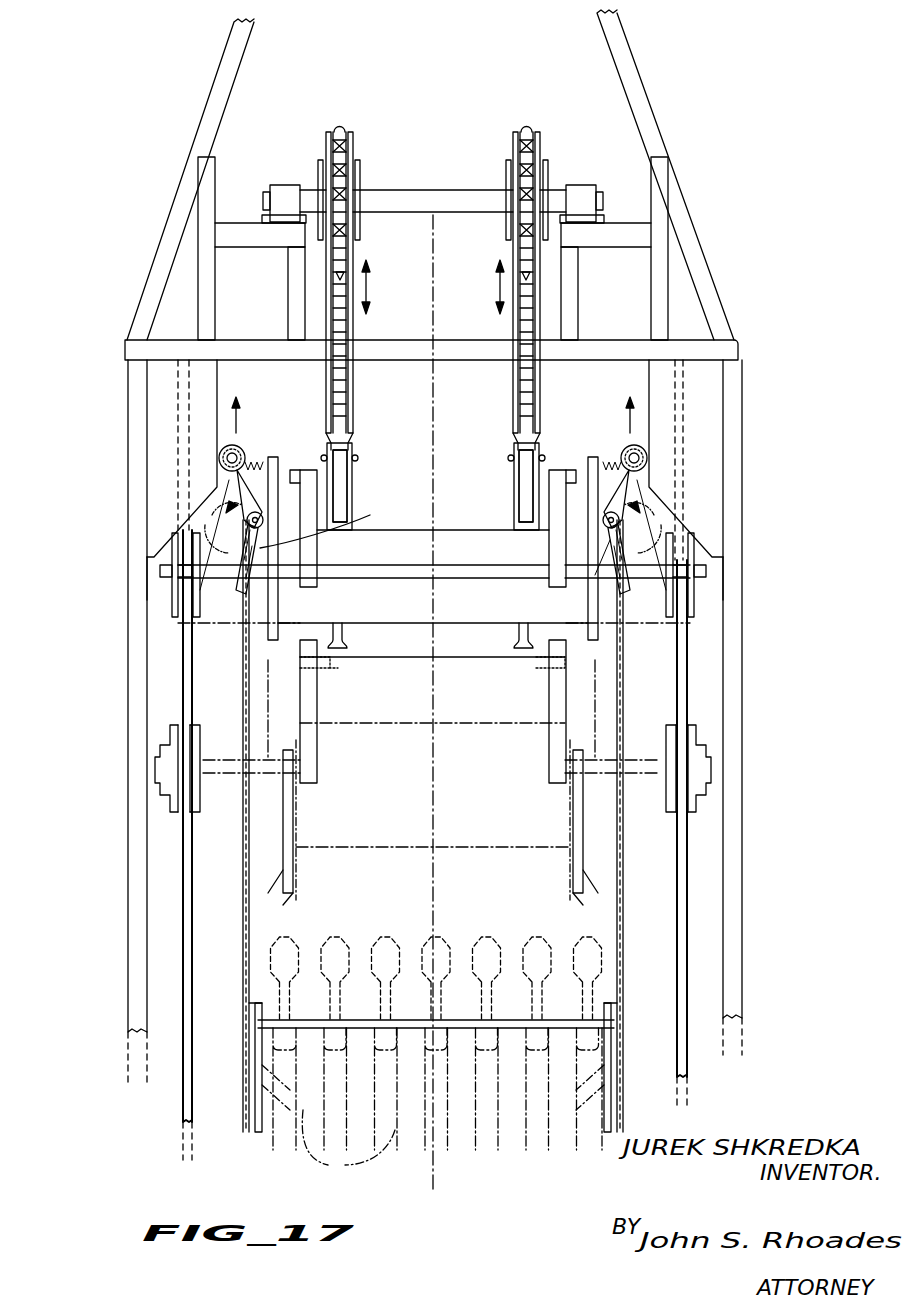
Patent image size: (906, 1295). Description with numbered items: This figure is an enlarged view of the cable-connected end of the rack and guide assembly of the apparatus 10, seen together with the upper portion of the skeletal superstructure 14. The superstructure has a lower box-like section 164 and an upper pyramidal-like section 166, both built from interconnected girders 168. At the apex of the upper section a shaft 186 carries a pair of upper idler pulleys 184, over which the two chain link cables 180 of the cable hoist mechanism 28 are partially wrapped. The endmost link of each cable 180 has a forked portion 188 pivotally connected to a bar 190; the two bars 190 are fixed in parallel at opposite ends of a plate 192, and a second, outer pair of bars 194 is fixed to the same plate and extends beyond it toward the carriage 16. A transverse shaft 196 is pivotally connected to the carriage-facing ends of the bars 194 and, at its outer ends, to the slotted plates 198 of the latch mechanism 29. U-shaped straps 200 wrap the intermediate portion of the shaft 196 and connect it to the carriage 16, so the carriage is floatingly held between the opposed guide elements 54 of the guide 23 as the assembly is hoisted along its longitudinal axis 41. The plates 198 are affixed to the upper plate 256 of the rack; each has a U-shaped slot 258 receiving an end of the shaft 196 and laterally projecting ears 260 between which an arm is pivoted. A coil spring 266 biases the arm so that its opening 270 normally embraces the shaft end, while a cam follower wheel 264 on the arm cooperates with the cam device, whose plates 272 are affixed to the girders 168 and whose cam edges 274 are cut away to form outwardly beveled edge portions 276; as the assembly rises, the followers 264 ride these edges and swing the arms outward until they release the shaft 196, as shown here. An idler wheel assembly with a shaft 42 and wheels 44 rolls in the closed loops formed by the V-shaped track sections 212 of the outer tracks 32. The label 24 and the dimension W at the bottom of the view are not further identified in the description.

The carpet setting machine 10 is at (158, 152).
The skeletal superstructure 14 is at (698, 228).
The carriage 16 is at (432, 668).
The guide 23 is at (610, 682).
The tufting comb assembly 24 is at (268, 1009).
The cable hoist mechanism 28 is at (355, 163).
The latch mechanism 29 is at (215, 490).
The outer track 32 is at (210, 890).
The longitudinal axis 41 is at (440, 880).
The shaft 42 is at (224, 582).
The wheels 44 is at (175, 612).
The guide elements 54 is at (192, 715).
The lower box-like section 164 is at (140, 704).
The upper pyramidal-like section 166 is at (188, 226).
The girders 168 is at (160, 298).
The chain link cables 180 is at (326, 138).
The upper idler pulleys 184 is at (320, 180).
The shaft 186 is at (385, 200).
The forked portion 188 is at (343, 440).
The bar 190 is at (345, 480).
The plate 192 is at (424, 490).
The bars 194 is at (305, 467).
The shaft 196 is at (520, 608).
The slotted plates 198 is at (272, 455).
The U-shaped straps 200 is at (335, 670).
The track sections 212 is at (245, 938).
The upper plate 256 is at (483, 560).
The U-shaped slot 258 is at (690, 620).
The ears 260 is at (259, 552).
The cam follower wheel 264 is at (222, 462).
The coil spring 266 is at (234, 458).
The opening 270 is at (610, 592).
The plates 272 is at (150, 373).
The cam edges 274 is at (220, 388).
The beveled edge portions 276 is at (165, 544).
The width W is at (350, 1176).